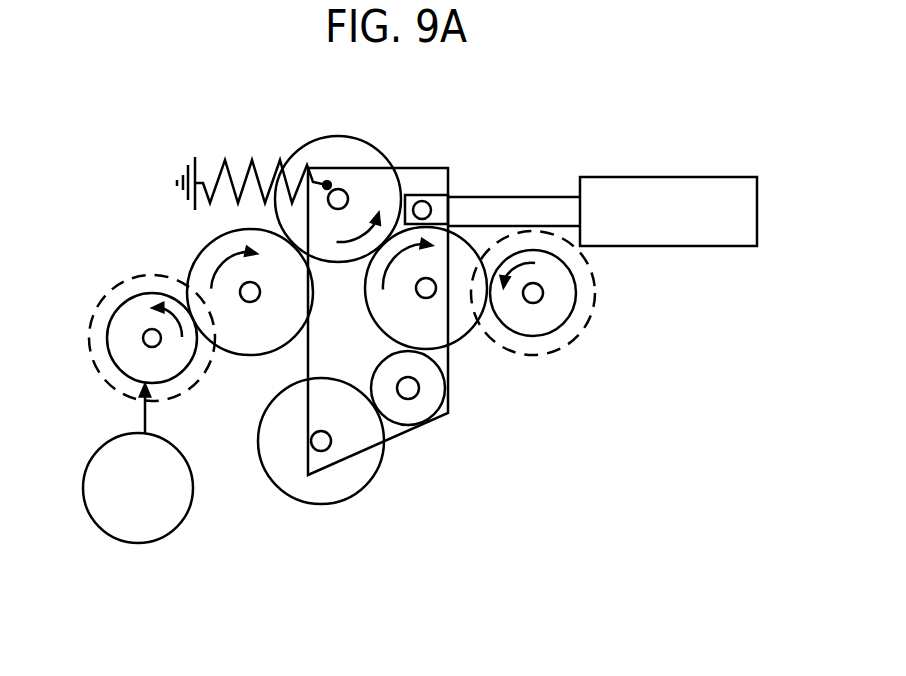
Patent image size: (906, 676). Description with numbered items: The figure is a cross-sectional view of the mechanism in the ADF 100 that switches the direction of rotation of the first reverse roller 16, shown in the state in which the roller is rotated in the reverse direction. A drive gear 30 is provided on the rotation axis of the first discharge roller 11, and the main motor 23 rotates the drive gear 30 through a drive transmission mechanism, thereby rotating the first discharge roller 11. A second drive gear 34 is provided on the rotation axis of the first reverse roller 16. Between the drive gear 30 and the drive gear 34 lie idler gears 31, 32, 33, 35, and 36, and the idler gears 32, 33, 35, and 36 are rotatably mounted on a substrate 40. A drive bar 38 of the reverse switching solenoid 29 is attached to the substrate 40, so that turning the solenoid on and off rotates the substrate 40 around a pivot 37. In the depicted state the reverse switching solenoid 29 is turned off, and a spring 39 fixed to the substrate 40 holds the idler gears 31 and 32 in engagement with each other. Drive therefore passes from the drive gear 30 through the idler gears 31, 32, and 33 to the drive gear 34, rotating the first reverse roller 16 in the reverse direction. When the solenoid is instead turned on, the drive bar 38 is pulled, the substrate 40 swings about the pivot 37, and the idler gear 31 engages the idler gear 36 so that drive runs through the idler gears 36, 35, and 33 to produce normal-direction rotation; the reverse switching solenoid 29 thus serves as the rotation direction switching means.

The ADF 100 is at (627, 125).
The reverse switching solenoid 29 is at (718, 177).
The drive bar 38 is at (523, 197).
The substrate 40 is at (416, 168).
The spring 39 is at (243, 178).
The idler gear 32 is at (340, 136).
The idler gear 31 is at (200, 253).
The drive gear 30 is at (128, 295).
The first discharge roller 11 is at (90, 316).
The main motor 23 is at (92, 460).
The idler gear 33 is at (460, 345).
The pivot 37 is at (415, 290).
The drive gear 34 is at (550, 338).
The first reverse roller 16 is at (598, 290).
The idler gear 35 is at (395, 426).
The idler gear 36 is at (330, 504).